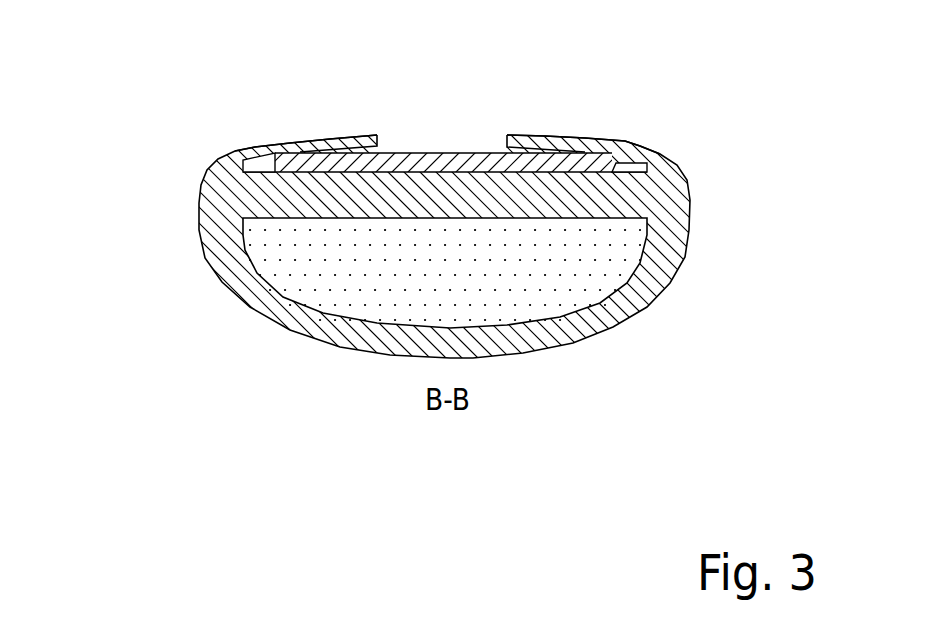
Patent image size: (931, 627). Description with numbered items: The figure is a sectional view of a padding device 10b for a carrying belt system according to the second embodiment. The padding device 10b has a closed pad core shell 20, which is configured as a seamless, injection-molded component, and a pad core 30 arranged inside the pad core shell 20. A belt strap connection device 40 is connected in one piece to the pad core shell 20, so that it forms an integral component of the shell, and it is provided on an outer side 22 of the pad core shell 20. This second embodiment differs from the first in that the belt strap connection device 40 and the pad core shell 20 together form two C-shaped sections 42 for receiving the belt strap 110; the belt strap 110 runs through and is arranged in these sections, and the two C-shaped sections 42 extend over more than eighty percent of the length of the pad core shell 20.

The padding device 10b is at (452, 212).
The pad core shell 20 is at (618, 328).
The outer side 22 is at (258, 168).
The pad core 30 is at (612, 253).
The belt strap connection device 40 is at (648, 138).
The C-shaped sections 42 is at (342, 114).
The belt strap 110 is at (458, 151).